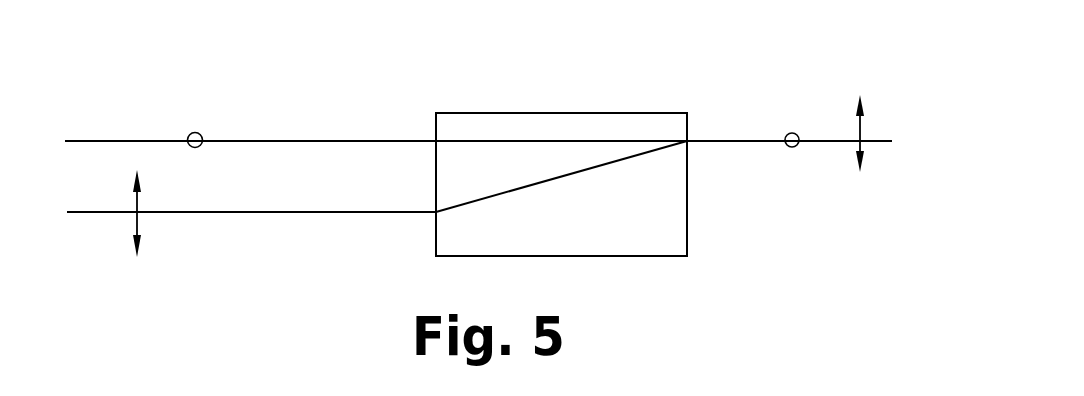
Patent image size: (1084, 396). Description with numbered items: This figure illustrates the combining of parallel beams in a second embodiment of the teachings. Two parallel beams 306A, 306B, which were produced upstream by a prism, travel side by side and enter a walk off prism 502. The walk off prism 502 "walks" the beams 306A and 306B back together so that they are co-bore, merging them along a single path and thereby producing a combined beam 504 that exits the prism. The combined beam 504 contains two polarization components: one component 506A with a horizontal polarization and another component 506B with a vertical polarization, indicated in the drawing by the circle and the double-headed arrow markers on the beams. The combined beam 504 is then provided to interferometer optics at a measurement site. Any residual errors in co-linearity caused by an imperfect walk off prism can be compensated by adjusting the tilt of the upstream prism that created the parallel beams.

The parallel beam 306A is at (196, 132).
The parallel beam 306B is at (142, 215).
The walk off prism 502 is at (567, 112).
The combined beam 504 is at (745, 137).
The component with horizontal polarization 506A is at (792, 148).
The component with vertical polarization 506B is at (865, 145).